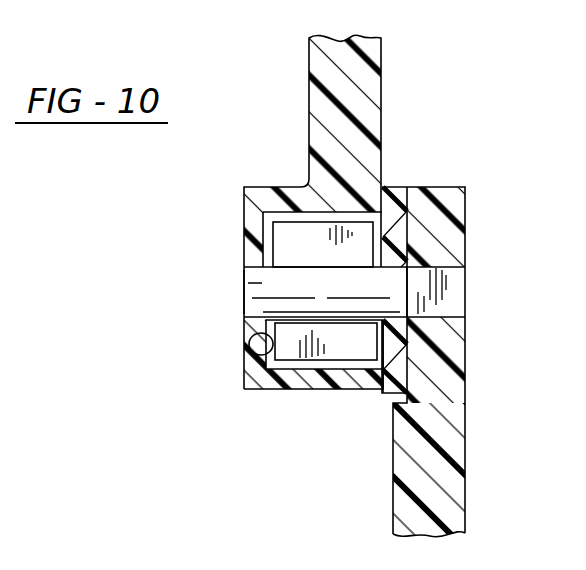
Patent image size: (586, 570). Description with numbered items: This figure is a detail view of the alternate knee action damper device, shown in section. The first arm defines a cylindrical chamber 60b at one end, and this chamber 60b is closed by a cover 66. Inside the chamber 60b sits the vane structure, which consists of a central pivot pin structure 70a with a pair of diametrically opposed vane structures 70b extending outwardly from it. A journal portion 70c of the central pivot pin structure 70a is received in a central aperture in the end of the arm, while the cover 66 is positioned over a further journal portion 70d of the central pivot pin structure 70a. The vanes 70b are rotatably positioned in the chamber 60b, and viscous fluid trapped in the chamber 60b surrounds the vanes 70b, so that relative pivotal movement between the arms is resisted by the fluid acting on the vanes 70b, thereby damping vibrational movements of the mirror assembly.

The cover 66 is at (393, 187).
The central pivot pin structure 70a is at (340, 295).
The vane structures 70b is at (325, 252).
The journal portion 70c is at (256, 289).
The further journal portion 70d is at (400, 327).
The cylindrical chamber 60b is at (248, 345).